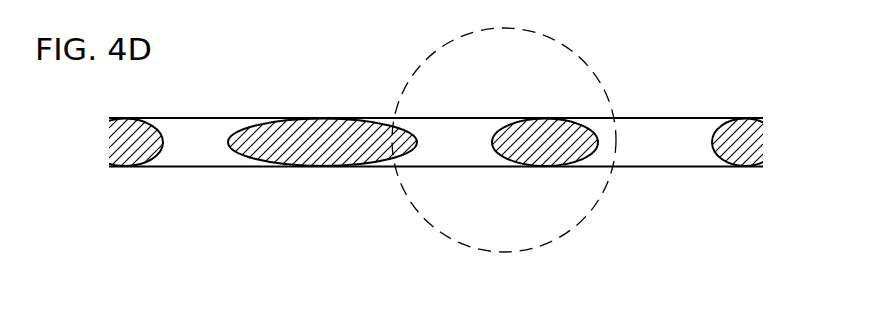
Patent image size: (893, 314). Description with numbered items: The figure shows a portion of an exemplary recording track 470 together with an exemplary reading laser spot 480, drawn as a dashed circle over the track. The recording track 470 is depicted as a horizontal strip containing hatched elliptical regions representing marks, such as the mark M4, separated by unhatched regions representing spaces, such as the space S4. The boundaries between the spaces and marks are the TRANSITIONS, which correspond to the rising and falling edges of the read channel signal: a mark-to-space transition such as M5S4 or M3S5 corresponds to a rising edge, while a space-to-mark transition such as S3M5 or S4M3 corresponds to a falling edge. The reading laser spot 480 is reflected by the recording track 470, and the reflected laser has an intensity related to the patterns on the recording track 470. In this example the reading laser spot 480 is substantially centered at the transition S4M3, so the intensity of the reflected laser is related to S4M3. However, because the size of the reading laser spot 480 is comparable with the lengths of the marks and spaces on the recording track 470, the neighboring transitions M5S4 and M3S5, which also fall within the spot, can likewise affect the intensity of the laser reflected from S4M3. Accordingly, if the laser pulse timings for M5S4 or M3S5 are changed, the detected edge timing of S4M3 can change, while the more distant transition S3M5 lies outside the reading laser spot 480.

The recording track 470 is at (674, 118).
The reading laser spot 480 is at (416, 70).
The space S4 is at (454, 117).
The mark M4 is at (434, 130).
The transition from space S3 to mark M5 S3M5 is at (228, 145).
The transition from space S4 to mark M3 S4M3 is at (487, 141).
The transition from mark M5 to space S4 M5S4 is at (420, 145).
The transition from mark M3 to space S5 M3S5 is at (603, 147).
The transitions TRANSITIONS is at (229, 142).